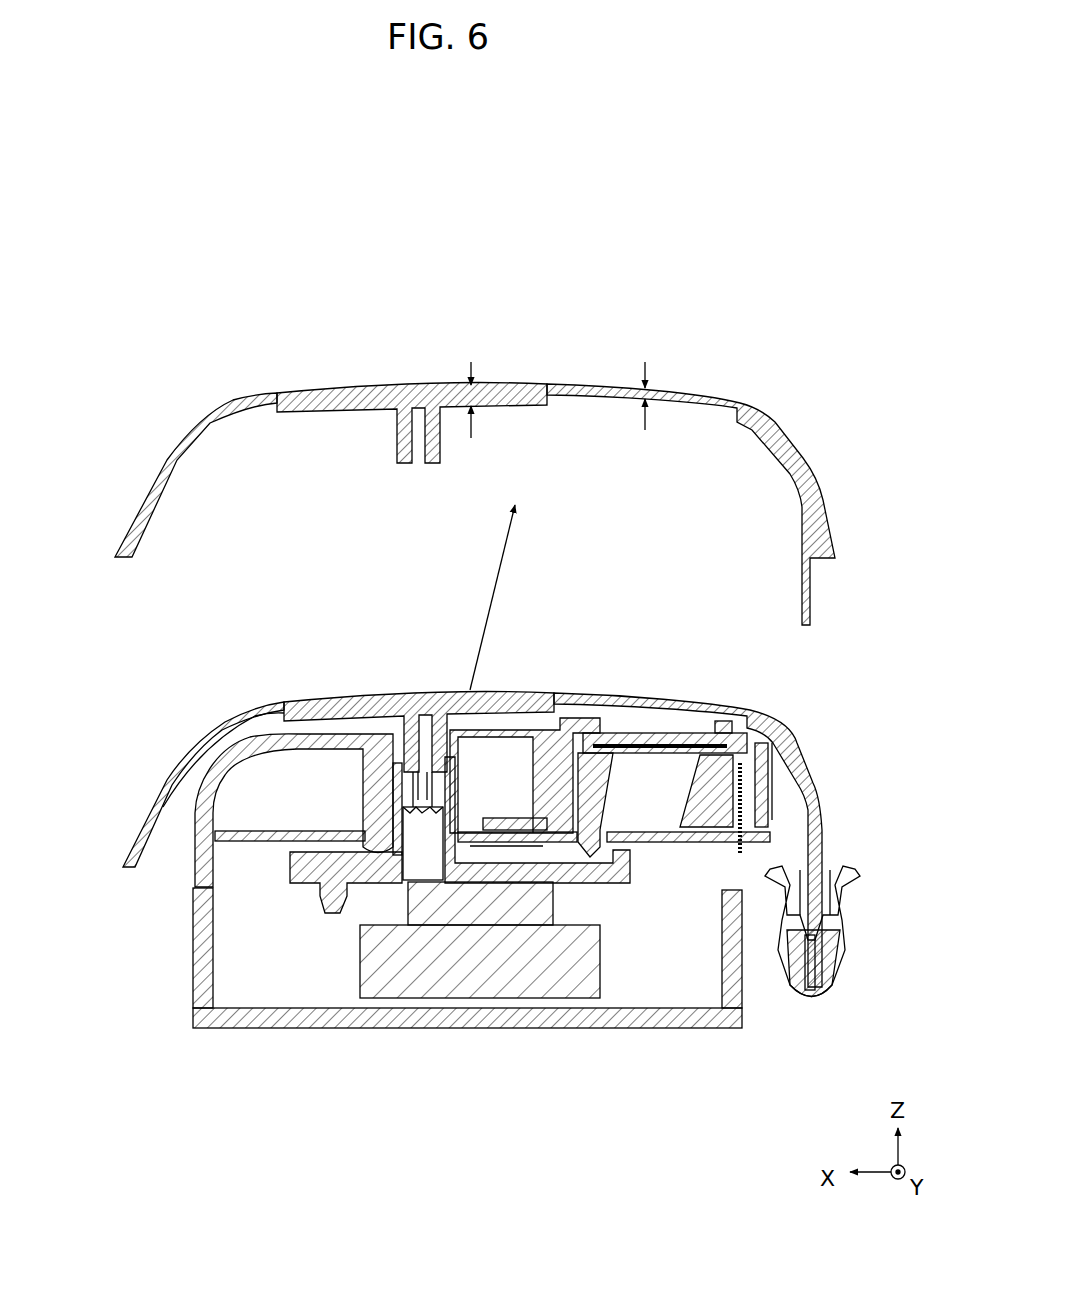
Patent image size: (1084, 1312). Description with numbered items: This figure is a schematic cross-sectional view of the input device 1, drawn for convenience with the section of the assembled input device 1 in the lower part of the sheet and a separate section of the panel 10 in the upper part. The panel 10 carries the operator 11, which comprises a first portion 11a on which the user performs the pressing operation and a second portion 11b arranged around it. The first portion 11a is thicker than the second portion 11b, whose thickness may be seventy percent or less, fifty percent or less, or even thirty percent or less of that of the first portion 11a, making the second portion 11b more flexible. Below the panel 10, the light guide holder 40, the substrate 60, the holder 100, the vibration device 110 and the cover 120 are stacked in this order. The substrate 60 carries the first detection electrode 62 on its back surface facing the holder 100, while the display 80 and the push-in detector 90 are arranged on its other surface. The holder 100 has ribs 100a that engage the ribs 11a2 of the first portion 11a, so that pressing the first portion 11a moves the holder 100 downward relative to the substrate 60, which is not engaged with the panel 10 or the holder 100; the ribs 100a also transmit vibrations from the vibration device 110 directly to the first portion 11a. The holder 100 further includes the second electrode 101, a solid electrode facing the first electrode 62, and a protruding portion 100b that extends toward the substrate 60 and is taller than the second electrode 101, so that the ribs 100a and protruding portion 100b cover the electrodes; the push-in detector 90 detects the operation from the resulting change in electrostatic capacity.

The input device 1 is at (483, 868).
The panel 10 is at (492, 629).
The operator 11 is at (475, 448).
The first portion 11a is at (378, 363).
The second portion 11b is at (185, 412).
The rib 11a2 is at (392, 730).
The light guide holder 40 is at (197, 803).
The substrate 60 is at (697, 840).
The first detection electrode 62 is at (513, 847).
The display 80 is at (660, 730).
The push-in detector 90 is at (505, 820).
The holder 100 is at (475, 876).
The rib 100a is at (368, 745).
The protruding portion 100b is at (290, 866).
The second electrode 101 is at (466, 885).
The vibration device 110 is at (401, 995).
The cover 120 is at (680, 1028).